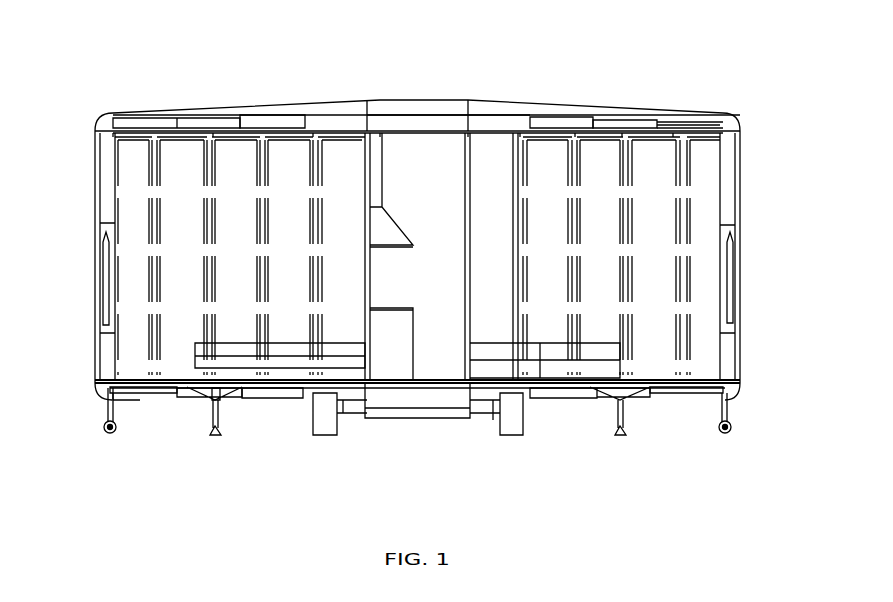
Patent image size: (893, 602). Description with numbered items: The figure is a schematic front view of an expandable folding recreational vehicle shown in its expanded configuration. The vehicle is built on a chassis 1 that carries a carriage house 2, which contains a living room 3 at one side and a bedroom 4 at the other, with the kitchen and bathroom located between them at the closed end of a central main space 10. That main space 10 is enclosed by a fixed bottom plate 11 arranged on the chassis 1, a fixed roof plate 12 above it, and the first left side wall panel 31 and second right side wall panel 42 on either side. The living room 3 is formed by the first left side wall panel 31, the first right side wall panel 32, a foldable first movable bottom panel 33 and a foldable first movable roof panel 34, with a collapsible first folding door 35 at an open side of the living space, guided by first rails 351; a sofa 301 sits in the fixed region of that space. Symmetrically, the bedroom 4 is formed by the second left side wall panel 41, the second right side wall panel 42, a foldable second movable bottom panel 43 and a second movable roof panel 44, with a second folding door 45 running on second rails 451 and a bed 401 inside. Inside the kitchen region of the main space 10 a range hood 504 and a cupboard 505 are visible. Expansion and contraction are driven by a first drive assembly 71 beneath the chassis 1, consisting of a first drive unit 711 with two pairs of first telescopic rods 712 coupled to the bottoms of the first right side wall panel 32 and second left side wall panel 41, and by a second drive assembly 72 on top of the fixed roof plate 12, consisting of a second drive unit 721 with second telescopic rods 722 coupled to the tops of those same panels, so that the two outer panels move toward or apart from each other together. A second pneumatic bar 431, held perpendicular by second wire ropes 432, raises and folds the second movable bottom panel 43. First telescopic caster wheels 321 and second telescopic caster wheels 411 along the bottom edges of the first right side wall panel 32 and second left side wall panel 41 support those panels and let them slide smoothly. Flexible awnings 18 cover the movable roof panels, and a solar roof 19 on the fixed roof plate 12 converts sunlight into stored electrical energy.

The chassis 1 is at (453, 407).
The carriage house 2 is at (337, 47).
The living room 3 is at (652, 209).
The bedroom 4 is at (205, 209).
The main space 10 is at (443, 333).
The fixed bottom plate 11 is at (390, 383).
The fixed roof plate 12 is at (418, 130).
The flexible awnings 18 is at (290, 107).
The solar roof 19 is at (413, 100).
The first left side wall panel 31 is at (468, 377).
The first right side wall panel 32 is at (740, 217).
The first movable bottom panel 33 is at (658, 383).
The first movable roof panel 34 is at (683, 131).
The first folding door 35 is at (707, 153).
The second left side wall panel 41 is at (98, 217).
The second right side wall panel 42 is at (367, 160).
The second movable bottom panel 43 is at (172, 380).
The second movable roof panel 44 is at (173, 130).
The second folding door 45 is at (137, 173).
The first drive assembly 71 is at (301, 438).
The second drive assembly 72 is at (555, 72).
The sofa 301 is at (528, 367).
The first telescopic caster wheels 321 is at (729, 411).
The first rails 351 is at (702, 386).
The bed 401 is at (198, 352).
The second telescopic caster wheels 411 is at (107, 402).
The second pneumatic bar 431 is at (218, 410).
The second wire ropes 432 is at (205, 401).
The second rails 451 is at (138, 380).
The range hood 504 is at (393, 220).
The cupboard 505 is at (394, 322).
The first drive unit 711 is at (375, 391).
The first telescopic rods 712 is at (255, 393).
The second drive unit 721 is at (453, 122).
The second telescopic rods 722 is at (606, 88).